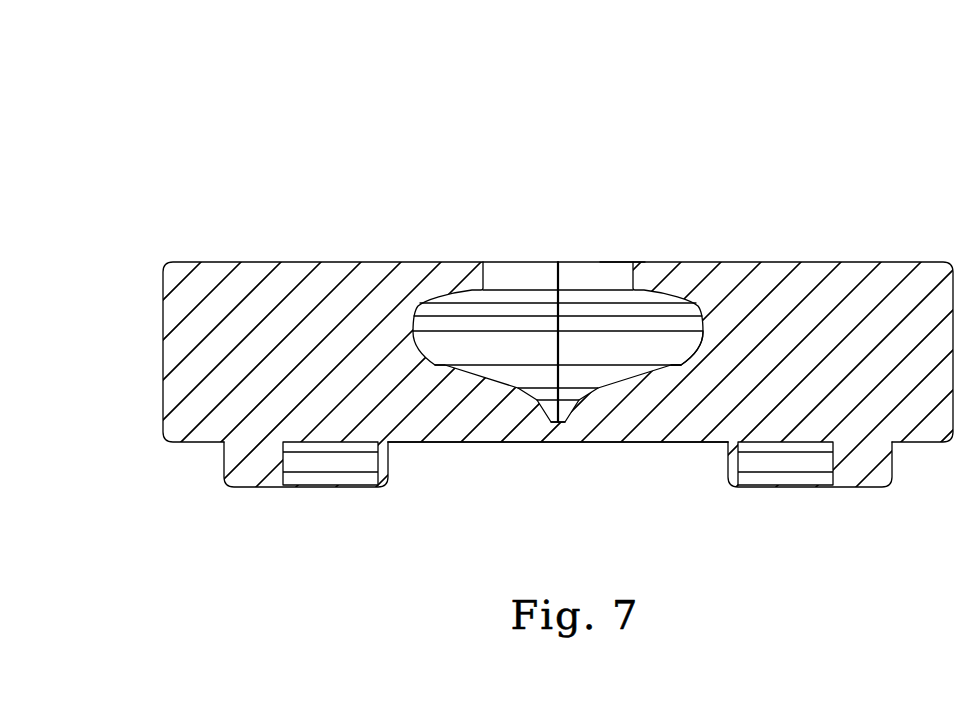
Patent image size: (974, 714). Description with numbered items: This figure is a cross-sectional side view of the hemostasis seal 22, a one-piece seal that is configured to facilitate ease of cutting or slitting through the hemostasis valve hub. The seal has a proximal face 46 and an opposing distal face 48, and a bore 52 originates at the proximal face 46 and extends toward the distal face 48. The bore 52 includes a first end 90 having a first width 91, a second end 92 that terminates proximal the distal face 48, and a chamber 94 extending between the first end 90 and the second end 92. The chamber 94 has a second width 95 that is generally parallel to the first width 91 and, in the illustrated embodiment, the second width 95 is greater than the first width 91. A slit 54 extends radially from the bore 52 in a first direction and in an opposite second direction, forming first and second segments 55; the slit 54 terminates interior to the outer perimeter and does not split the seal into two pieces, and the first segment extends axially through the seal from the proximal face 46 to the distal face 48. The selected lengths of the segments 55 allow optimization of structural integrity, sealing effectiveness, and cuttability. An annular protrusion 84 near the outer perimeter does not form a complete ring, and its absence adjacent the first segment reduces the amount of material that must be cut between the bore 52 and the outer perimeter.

The hemostasis seal 22 is at (487, 315).
The proximal face 46 is at (749, 240).
The distal face 48 is at (680, 500).
The bore 52 is at (580, 230).
The slit 54 is at (570, 351).
The slit segments 55 is at (545, 343).
The annular protrusion 84 is at (227, 480).
The first end 90 is at (500, 262).
The first width 91 is at (620, 262).
The second end 92 is at (568, 405).
The chamber 94 is at (667, 343).
The second width 95 is at (696, 320).